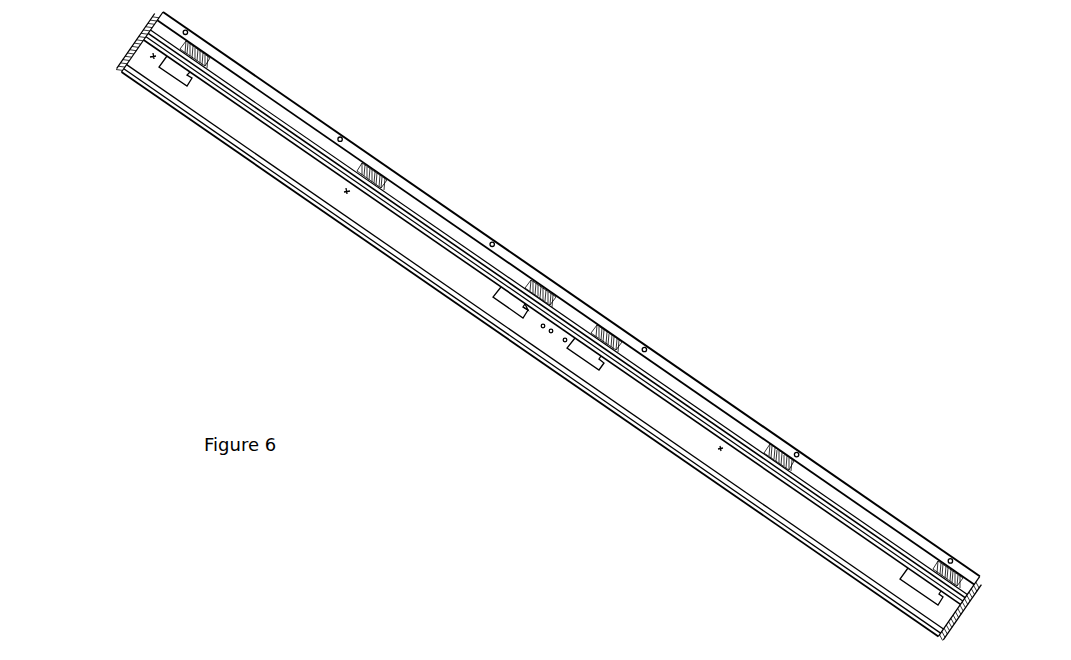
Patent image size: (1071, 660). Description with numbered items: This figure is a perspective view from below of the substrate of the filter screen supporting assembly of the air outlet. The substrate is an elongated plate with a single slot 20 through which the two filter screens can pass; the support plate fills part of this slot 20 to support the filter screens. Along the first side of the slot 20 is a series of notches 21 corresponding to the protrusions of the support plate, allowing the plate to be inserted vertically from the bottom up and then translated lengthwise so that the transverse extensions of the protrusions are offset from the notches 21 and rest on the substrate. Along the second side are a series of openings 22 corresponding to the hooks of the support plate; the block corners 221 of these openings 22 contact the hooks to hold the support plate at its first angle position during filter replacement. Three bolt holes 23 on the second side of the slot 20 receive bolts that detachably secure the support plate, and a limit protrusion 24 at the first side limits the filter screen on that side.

The slot 20 is at (238, 107).
The notches 21 is at (202, 42).
The openings 22 is at (168, 67).
The block corners 221 is at (498, 290).
The bolt holes 23 is at (145, 48).
The limit protrusion 24 is at (245, 87).